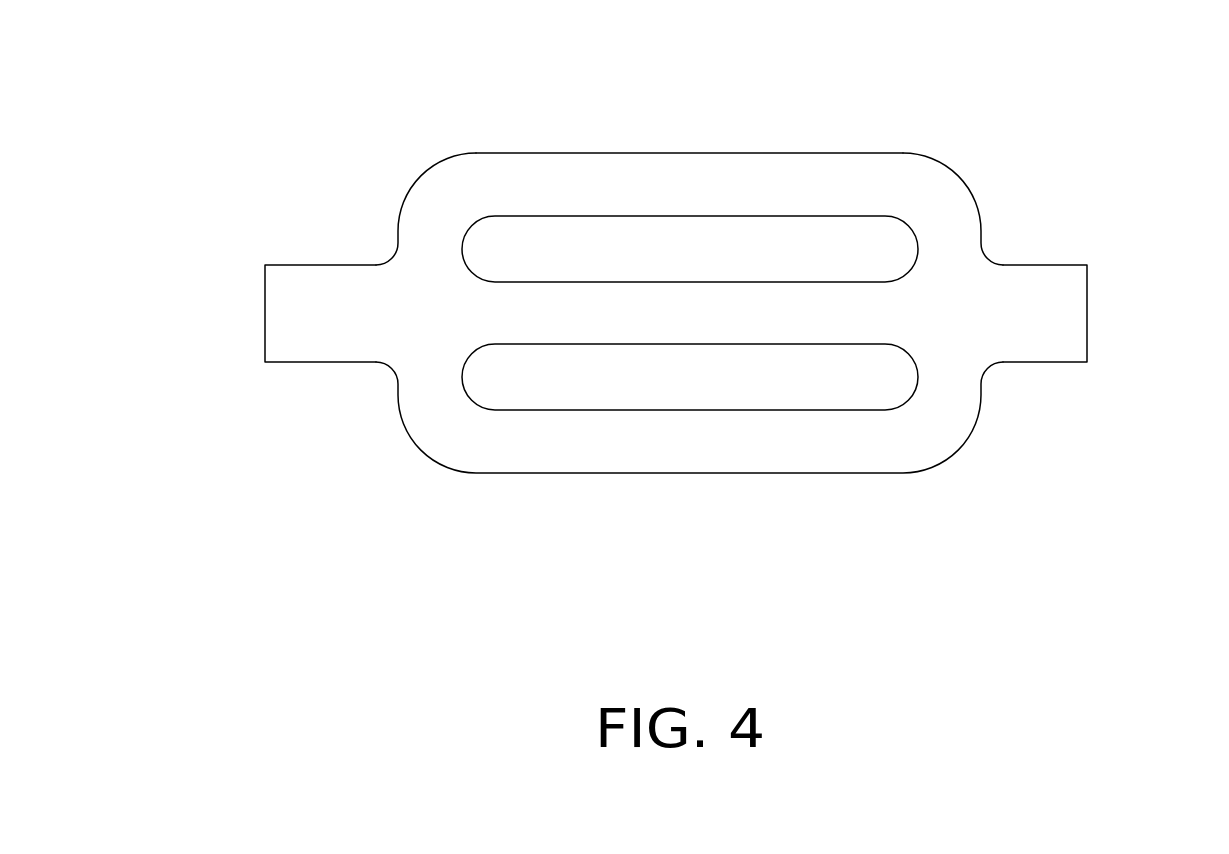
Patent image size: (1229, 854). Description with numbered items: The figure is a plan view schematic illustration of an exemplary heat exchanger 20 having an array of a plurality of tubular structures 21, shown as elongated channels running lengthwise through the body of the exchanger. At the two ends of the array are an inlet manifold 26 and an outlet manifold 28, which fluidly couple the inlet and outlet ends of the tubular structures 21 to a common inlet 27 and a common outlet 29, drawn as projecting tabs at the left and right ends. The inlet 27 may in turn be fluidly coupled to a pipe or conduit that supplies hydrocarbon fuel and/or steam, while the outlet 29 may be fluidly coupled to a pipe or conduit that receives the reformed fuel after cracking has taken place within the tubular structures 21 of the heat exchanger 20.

The heat exchanger 20 is at (669, 258).
The tubular structures 21 is at (592, 437).
The inlet manifold 26 is at (430, 220).
The inlet 27 is at (265, 312).
The outlet manifold 28 is at (947, 212).
The outlet 29 is at (1087, 313).